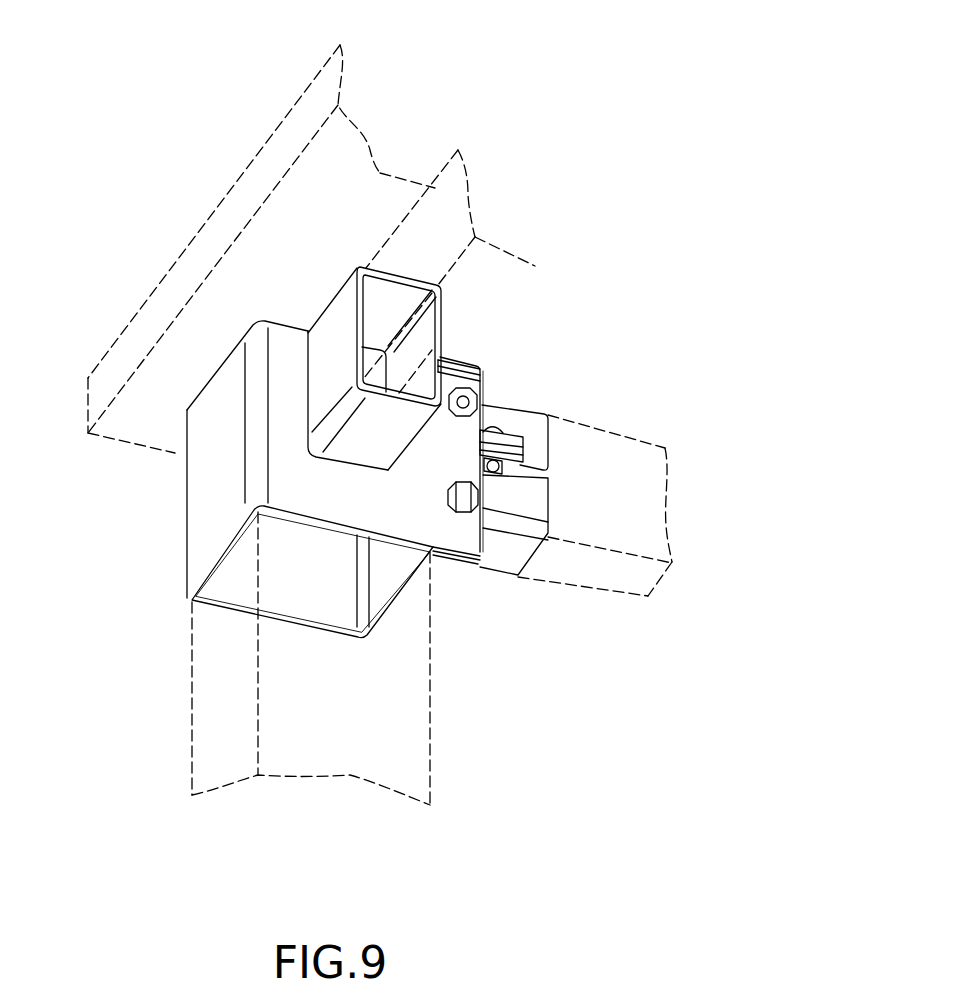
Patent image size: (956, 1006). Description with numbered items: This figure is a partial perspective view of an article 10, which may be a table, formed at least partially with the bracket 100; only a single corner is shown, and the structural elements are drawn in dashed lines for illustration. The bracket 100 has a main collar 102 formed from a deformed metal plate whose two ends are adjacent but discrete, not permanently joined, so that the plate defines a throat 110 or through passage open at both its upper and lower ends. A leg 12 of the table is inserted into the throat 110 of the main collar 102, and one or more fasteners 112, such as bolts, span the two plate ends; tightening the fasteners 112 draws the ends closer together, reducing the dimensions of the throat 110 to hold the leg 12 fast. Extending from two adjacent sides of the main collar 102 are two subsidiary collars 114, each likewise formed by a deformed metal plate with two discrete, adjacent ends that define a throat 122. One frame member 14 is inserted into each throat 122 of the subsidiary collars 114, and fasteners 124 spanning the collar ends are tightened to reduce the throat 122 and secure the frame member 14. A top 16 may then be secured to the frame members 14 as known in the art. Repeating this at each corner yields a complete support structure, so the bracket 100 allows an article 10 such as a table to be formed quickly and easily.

The article 10 is at (528, 93).
The leg 12 is at (440, 733).
The frame member 14 is at (508, 265).
The top 16 is at (253, 153).
The bracket 100 is at (140, 503).
The main collar 102 is at (223, 595).
The throat 110 is at (313, 590).
The fastener 112 is at (465, 400).
The subsidiary collar 114 is at (333, 327).
The throat 122 is at (406, 294).
The fastener 124 is at (463, 367).